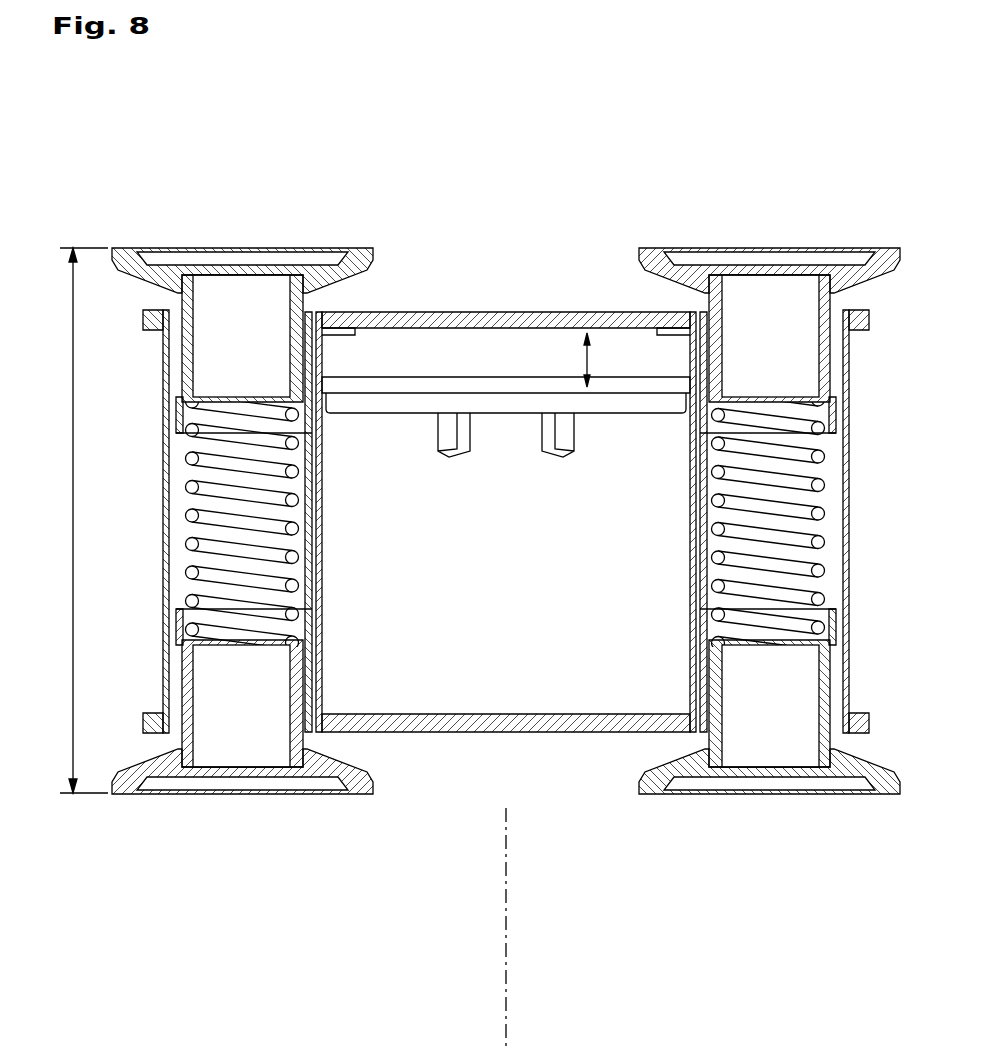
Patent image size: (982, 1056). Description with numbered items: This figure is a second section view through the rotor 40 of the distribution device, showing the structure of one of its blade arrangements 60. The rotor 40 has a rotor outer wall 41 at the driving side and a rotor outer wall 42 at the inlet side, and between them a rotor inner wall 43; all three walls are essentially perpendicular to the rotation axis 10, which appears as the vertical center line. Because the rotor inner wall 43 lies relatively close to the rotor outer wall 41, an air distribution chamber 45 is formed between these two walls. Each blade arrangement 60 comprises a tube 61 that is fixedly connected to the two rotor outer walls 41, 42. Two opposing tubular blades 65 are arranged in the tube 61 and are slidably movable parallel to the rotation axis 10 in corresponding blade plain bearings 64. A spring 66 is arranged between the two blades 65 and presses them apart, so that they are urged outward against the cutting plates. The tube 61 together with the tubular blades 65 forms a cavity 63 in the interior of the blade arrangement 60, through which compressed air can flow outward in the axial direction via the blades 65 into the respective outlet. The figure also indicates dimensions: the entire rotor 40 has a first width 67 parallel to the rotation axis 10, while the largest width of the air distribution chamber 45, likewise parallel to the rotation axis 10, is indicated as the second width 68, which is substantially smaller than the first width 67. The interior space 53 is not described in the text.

The rotation axis 10 is at (508, 992).
The rotor 40 is at (133, 141).
The rotor outer wall at the driving side 41 is at (425, 318).
The rotor outer wall at the inlet side 42 is at (585, 733).
The rotor inner wall 43 is at (530, 408).
The air distribution chamber 45 is at (473, 358).
The receiving space 53 is at (440, 642).
The blade arrangement 60 is at (243, 226).
The tube 61 is at (166, 536).
The cavity 63 is at (251, 316).
The blade plain bearing 64 is at (180, 374).
The tubular blade 65 is at (357, 264).
The spring 66 is at (189, 487).
The first width 67 is at (73, 497).
The second width 68 is at (589, 355).